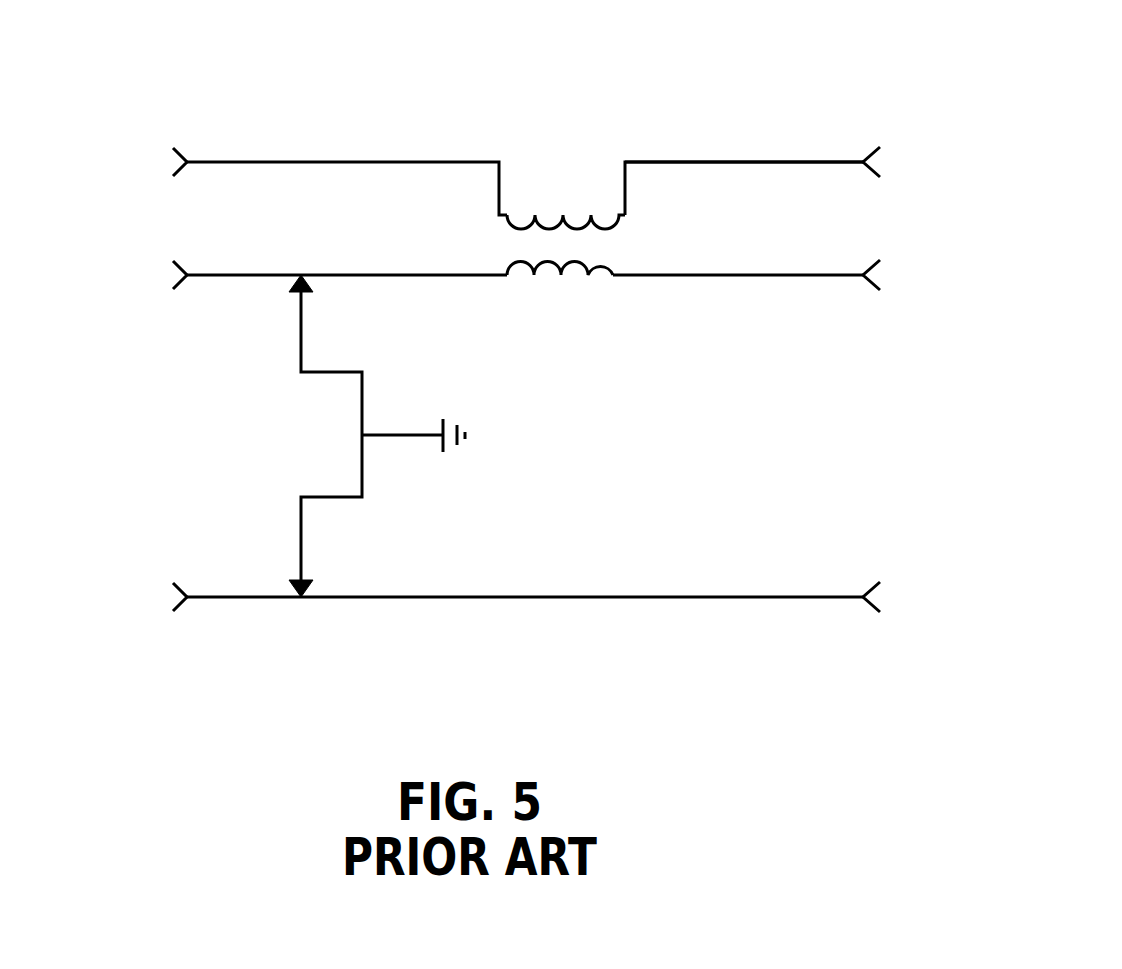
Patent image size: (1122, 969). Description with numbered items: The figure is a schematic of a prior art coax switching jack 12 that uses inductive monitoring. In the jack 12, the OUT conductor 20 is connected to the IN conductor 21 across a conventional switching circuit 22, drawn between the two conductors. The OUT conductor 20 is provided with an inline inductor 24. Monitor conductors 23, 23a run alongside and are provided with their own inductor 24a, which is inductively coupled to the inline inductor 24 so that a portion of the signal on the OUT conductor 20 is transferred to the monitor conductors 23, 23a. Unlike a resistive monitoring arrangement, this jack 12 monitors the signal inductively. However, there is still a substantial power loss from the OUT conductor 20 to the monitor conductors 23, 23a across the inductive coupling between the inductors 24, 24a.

The jack 12 is at (933, 502).
The OUT conductor 20 is at (783, 275).
The IN conductor 21 is at (672, 597).
The switching circuit 22 is at (327, 418).
The monitor conductor 23 is at (338, 162).
The monitor conductor 23a is at (773, 162).
The inline inductor 24 is at (608, 262).
The inductor 24a is at (570, 228).